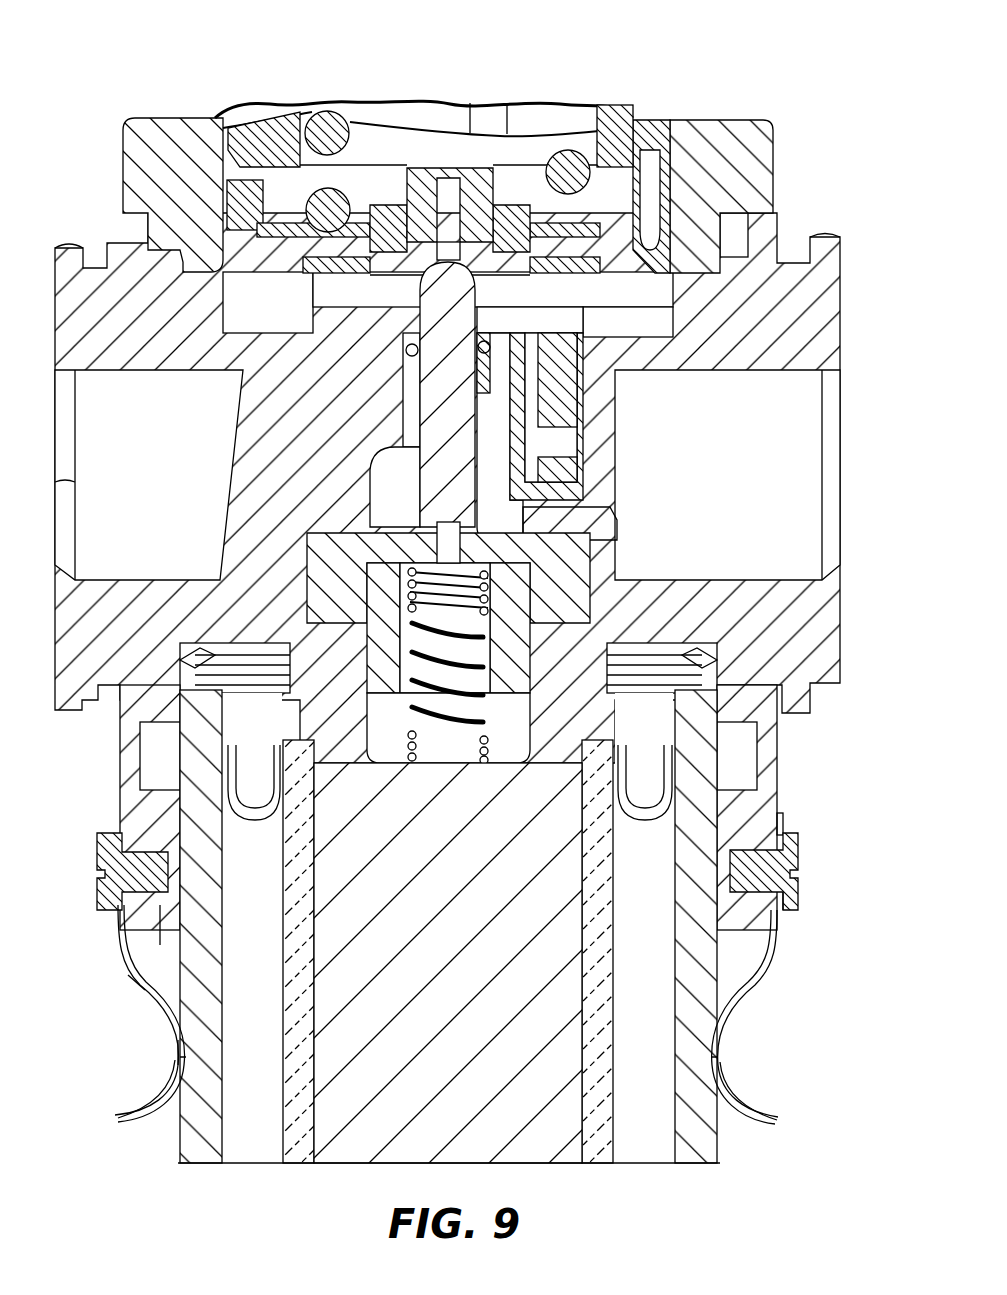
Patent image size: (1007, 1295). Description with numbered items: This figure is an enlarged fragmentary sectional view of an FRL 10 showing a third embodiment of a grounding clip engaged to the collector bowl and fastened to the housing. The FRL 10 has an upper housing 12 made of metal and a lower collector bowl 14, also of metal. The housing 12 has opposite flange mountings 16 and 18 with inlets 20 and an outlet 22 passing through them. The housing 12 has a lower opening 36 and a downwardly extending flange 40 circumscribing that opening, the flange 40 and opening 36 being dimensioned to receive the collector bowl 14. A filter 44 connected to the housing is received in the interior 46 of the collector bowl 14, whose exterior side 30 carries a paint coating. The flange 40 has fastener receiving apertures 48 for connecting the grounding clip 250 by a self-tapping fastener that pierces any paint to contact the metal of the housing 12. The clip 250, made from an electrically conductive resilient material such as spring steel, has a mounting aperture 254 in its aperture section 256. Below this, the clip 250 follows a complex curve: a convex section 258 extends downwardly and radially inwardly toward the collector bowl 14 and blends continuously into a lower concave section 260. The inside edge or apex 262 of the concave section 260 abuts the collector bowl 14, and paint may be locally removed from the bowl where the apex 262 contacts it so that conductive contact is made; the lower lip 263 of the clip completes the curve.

The FRL 10 is at (758, 102).
The upper housing 12 is at (785, 262).
The lower collector bowl 14 is at (202, 1143).
The flange mounting 16 is at (70, 248).
The flange mounting 18 is at (832, 250).
The inlets 20 is at (88, 481).
The outlet 22 is at (825, 440).
The exterior side 30 is at (718, 950).
The lower opening 36 is at (154, 939).
The downwardly extending flange 40 is at (770, 753).
The filter 44 is at (300, 1140).
The interior 46 is at (247, 1150).
The fastener receiving apertures 48 is at (794, 864).
The clip 250 is at (117, 947).
The mounting aperture 254 is at (797, 886).
The aperture section 256 is at (782, 822).
The convex section 258 is at (128, 990).
The lower concave section 260 is at (165, 1040).
The apex 262 is at (183, 1058).
The boot lip 263 is at (140, 1128).